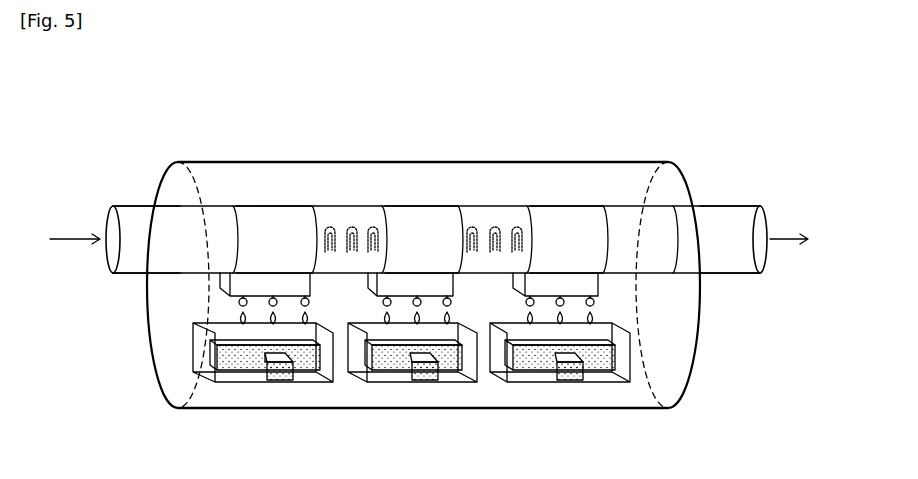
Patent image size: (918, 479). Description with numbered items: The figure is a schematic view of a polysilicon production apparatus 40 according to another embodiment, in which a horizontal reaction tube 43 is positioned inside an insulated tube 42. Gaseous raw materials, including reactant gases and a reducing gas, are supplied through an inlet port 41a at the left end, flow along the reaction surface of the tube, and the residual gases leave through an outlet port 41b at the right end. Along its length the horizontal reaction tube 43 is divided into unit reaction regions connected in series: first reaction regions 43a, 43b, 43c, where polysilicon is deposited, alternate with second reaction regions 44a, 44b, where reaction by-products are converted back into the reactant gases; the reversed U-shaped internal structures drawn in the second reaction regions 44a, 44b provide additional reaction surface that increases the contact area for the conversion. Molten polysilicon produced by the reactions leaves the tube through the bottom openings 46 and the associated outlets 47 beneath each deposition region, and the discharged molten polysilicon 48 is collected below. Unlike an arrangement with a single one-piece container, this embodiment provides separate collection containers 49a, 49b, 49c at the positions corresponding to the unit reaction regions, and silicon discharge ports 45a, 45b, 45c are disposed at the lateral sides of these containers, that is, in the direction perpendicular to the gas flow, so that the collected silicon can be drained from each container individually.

The multi-stage flue gas purification apparatus 40 is at (170, 112).
The input pipe 41a is at (133, 205).
The output pipe 41b is at (727, 206).
The outer housing cylinder 42 is at (263, 162).
The inner flow pipe 43 is at (197, 272).
The first pipe section 43a is at (285, 205).
The second pipe section 43b is at (435, 205).
The third pipe section 43c is at (571, 215).
The first heater 44a is at (356, 212).
The second heater 44b is at (496, 206).
The silicon discharge port 45a is at (292, 373).
The silicon discharge port 45b is at (437, 373).
The silicon discharge port 45c is at (587, 373).
The nozzle manifold 46 is at (593, 283).
The spray nozzle 47 is at (590, 301).
The absorbent layer 48 is at (607, 353).
The separate collection container 49a is at (272, 382).
The separate collection container 49b is at (420, 382).
The separate collection container 49c is at (550, 382).